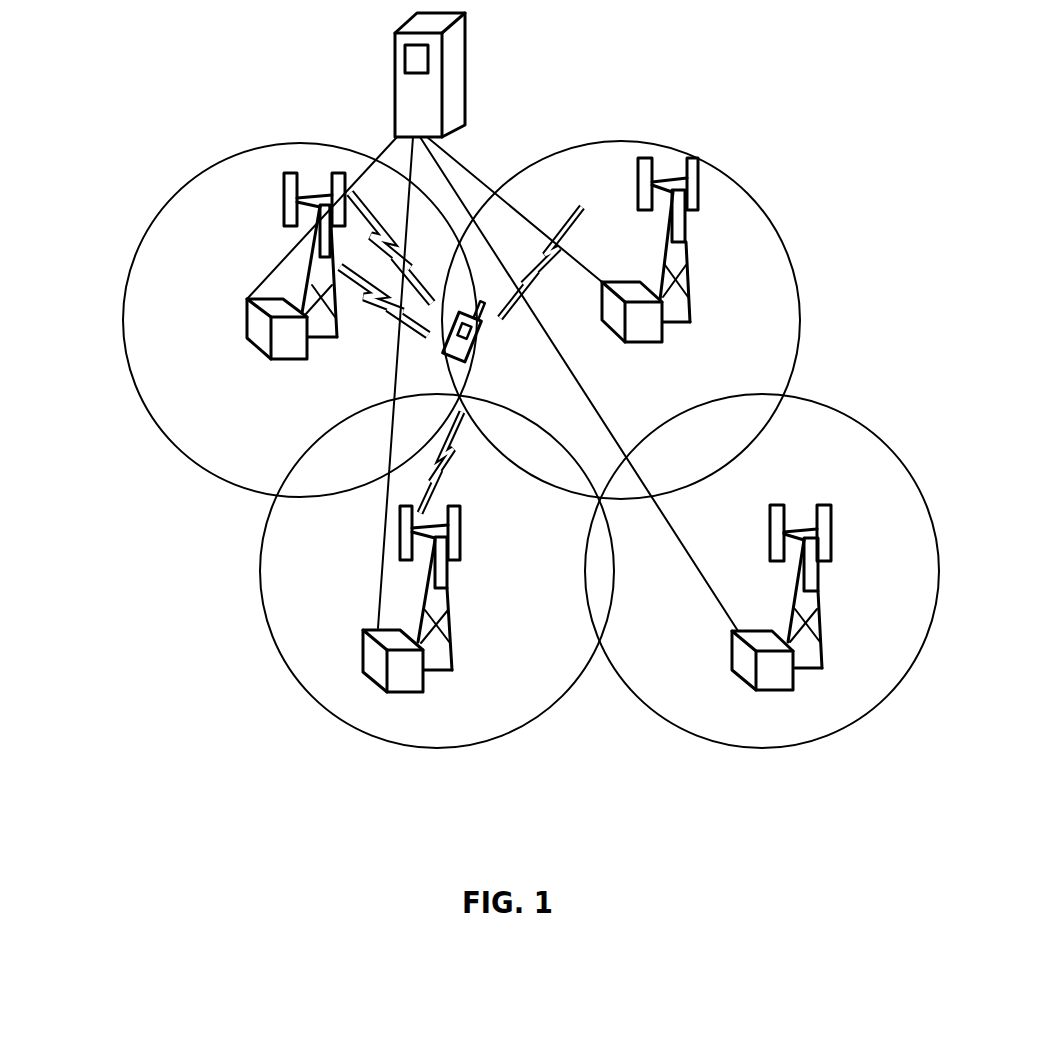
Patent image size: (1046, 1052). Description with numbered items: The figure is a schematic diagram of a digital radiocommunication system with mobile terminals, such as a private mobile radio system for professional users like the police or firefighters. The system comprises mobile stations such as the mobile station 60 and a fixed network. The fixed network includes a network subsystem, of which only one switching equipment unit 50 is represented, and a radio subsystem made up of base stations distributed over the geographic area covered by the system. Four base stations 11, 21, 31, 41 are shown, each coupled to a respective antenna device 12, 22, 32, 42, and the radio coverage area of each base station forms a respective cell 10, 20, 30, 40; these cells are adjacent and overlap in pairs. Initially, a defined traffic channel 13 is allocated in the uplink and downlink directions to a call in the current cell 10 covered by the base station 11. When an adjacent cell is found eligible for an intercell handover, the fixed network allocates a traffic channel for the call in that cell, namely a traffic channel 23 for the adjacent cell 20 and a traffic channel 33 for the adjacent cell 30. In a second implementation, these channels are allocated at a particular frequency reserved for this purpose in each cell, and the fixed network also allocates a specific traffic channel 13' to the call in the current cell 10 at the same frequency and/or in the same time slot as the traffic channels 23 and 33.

The cell 10 is at (148, 292).
The base station 11 is at (250, 342).
The antenna device 12 is at (284, 200).
The traffic channel 13 is at (376, 176).
The specific traffic channel 13' is at (257, 385).
The cell 20 is at (765, 265).
The base station 21 is at (663, 343).
The antenna device 22 is at (700, 187).
The traffic channel 23 is at (568, 217).
The cell 30 is at (285, 618).
The base station 31 is at (367, 675).
The antenna device 32 is at (450, 567).
The traffic channel 33 is at (452, 468).
The cell 40 is at (843, 712).
The base station 41 is at (774, 692).
The antenna device 42 is at (831, 505).
The switching equipment unit 50 is at (468, 63).
The mobile station 60 is at (443, 352).